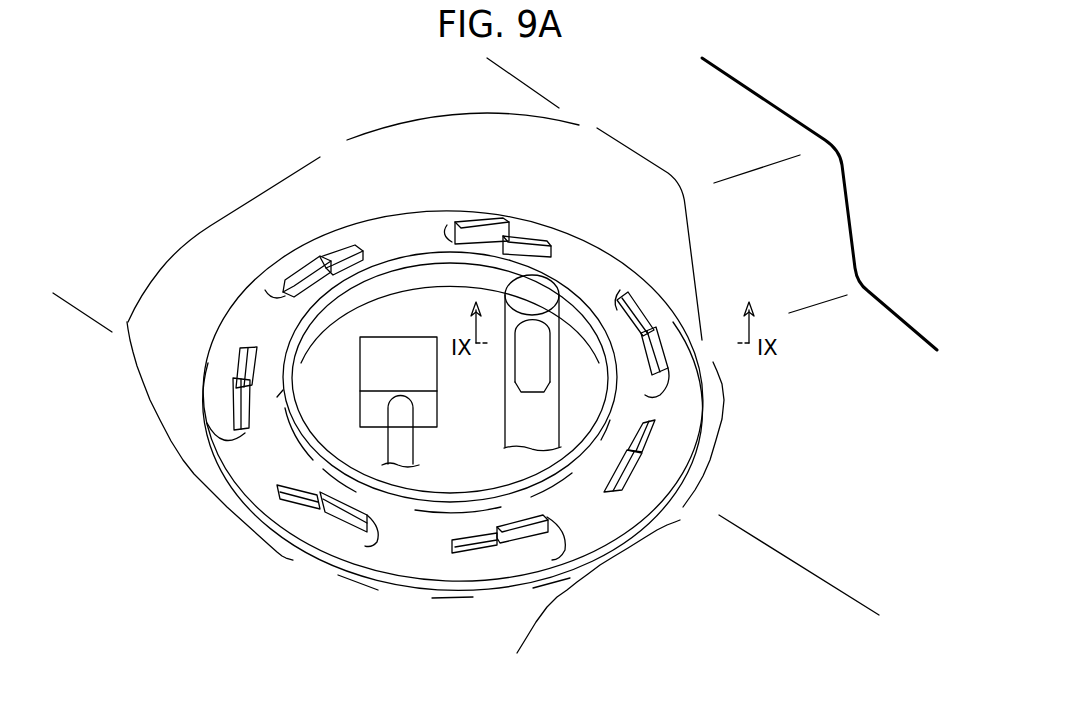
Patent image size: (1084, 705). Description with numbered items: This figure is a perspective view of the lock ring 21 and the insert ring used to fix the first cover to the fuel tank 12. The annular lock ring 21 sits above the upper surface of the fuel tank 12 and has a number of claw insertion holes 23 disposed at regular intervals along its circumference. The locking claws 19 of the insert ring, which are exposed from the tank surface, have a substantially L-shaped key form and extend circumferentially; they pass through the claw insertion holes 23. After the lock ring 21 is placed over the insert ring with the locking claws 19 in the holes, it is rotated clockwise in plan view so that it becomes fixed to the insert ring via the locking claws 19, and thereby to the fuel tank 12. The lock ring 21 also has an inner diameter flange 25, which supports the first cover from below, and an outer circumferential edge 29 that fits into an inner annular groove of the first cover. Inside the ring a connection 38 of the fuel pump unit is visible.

The fuel tank 12 is at (860, 192).
The locking claws 19 is at (447, 220).
The lock ring 21 is at (441, 382).
The claw insertion holes 23 is at (343, 248).
The inner diameter flange 25 is at (413, 253).
The outer circumferential edge 29 is at (395, 580).
The connection 38 is at (385, 337).